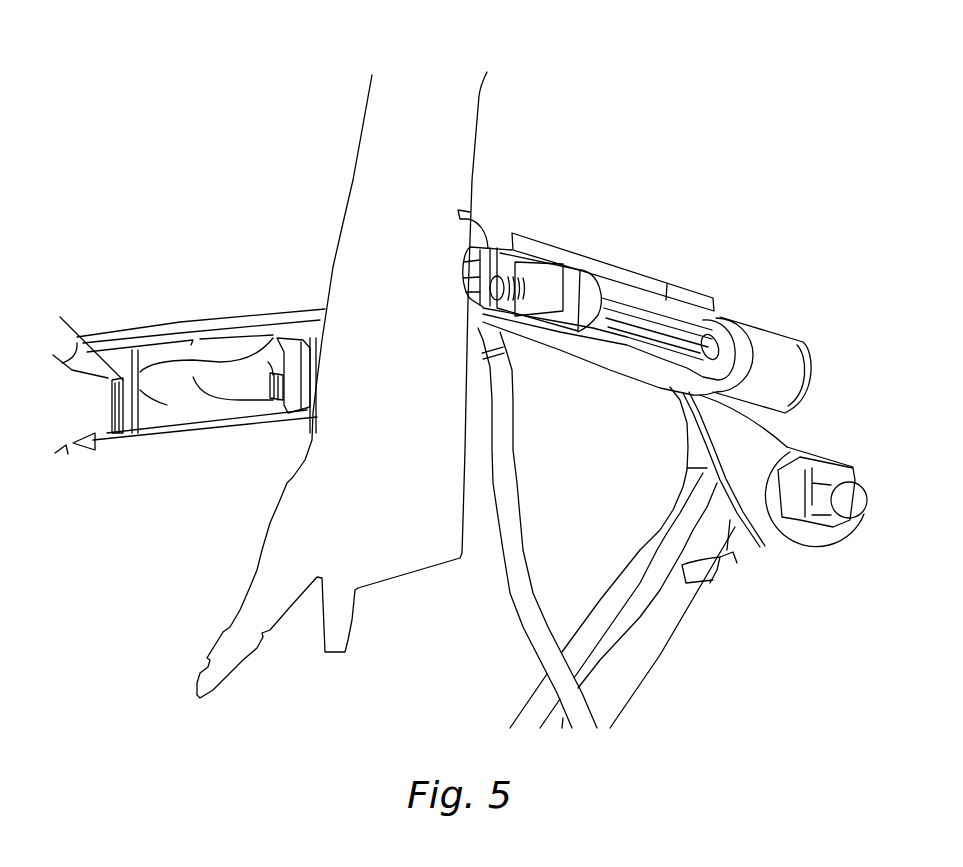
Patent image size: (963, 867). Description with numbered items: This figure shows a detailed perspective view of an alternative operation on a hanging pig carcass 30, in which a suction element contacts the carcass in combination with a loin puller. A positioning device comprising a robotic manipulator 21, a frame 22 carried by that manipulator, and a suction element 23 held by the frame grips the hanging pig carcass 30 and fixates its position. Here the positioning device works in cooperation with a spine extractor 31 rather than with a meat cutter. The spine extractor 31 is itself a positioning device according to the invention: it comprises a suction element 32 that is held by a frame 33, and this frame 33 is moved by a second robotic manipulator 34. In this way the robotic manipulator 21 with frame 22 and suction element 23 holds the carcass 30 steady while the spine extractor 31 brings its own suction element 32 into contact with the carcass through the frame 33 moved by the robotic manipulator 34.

The robotic manipulator 21 is at (162, 397).
The frame 22 is at (297, 343).
The suction element 23 is at (217, 362).
The hanging pig carcass 30 is at (393, 168).
The spine extractor 31 is at (721, 630).
The suction element 32 is at (477, 221).
The frame 33 is at (474, 275).
The robotic manipulator 34 is at (649, 301).